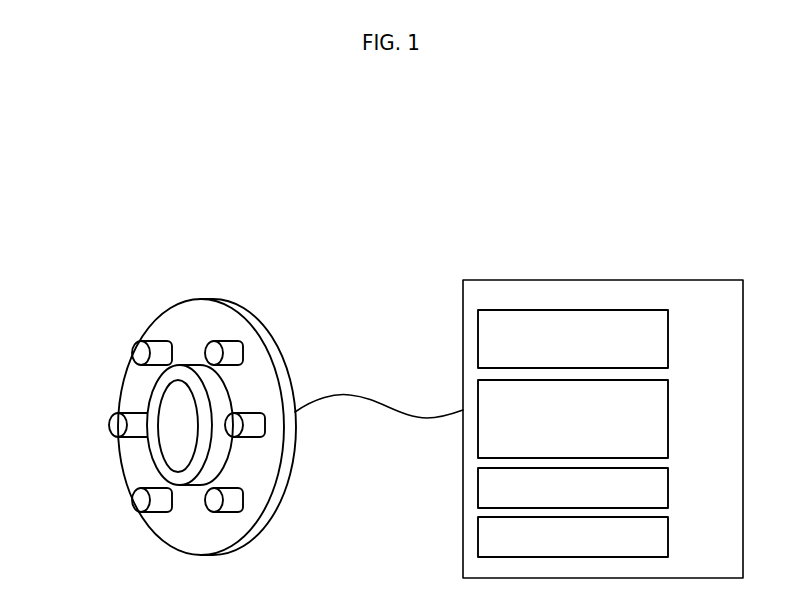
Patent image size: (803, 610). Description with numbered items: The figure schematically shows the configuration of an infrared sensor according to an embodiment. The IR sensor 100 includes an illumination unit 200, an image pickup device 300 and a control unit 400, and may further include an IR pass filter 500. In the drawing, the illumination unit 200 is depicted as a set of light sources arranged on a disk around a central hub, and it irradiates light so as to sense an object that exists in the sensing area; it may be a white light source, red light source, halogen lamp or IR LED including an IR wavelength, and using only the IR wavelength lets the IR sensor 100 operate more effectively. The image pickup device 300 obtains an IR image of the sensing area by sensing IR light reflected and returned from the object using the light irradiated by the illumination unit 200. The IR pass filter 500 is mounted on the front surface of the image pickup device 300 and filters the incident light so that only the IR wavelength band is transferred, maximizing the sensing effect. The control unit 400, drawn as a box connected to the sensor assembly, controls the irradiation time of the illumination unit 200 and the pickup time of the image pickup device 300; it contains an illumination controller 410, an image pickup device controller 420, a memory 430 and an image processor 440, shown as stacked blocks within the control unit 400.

The IR sensor 100 is at (302, 255).
The illumination unit 200 is at (160, 350).
The image pickup device 300 is at (218, 449).
The control unit 400 is at (660, 280).
The illumination controller 410 is at (670, 339).
The image pickup device controller 420 is at (670, 420).
The memory 430 is at (670, 487).
The image processor 440 is at (670, 535).
The IR pass filter 500 is at (176, 448).